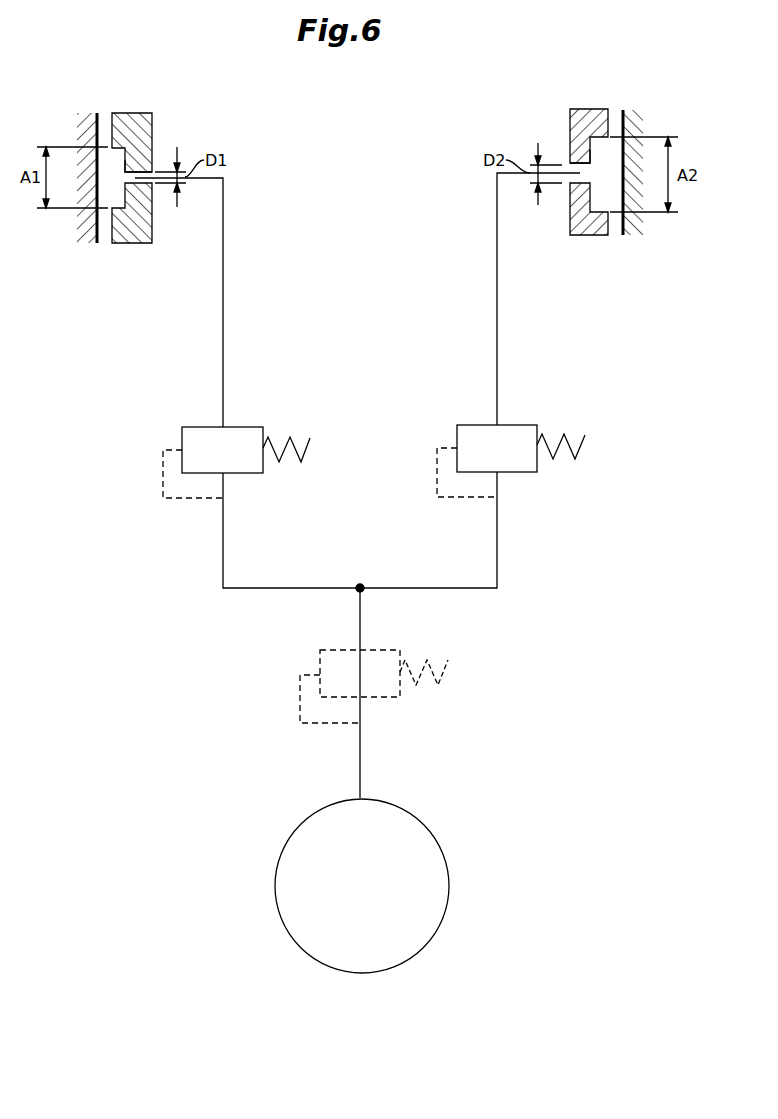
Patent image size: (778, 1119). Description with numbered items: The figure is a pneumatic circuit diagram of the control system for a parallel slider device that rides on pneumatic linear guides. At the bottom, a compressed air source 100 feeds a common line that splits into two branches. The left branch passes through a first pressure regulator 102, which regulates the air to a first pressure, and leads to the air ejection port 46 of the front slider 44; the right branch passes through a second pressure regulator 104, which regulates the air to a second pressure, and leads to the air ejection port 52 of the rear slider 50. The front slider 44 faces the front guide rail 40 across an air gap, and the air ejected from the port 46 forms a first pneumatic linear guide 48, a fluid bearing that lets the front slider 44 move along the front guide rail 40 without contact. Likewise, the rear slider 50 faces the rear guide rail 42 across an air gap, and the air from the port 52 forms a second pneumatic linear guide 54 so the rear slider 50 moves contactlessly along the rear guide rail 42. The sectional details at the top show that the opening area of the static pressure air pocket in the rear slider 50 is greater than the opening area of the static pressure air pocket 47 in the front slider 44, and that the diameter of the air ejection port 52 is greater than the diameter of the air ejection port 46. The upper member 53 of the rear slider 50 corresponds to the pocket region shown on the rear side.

The front guide rail 40 is at (88, 232).
The rear guide rail 42 is at (628, 230).
The front slider 44 is at (127, 232).
The air ejection port 46 is at (131, 172).
The static pressure air pocket 47 is at (131, 158).
The first pneumatic linear guide 48 is at (98, 130).
The rear slider 50 is at (592, 230).
The air ejection port 52 is at (590, 152).
The second upper member 53 is at (588, 150).
The second pneumatic linear guide 54 is at (622, 122).
The compressed air source 100 is at (433, 832).
The first pressure regulator 102 is at (203, 447).
The second pressure regulator 104 is at (478, 445).